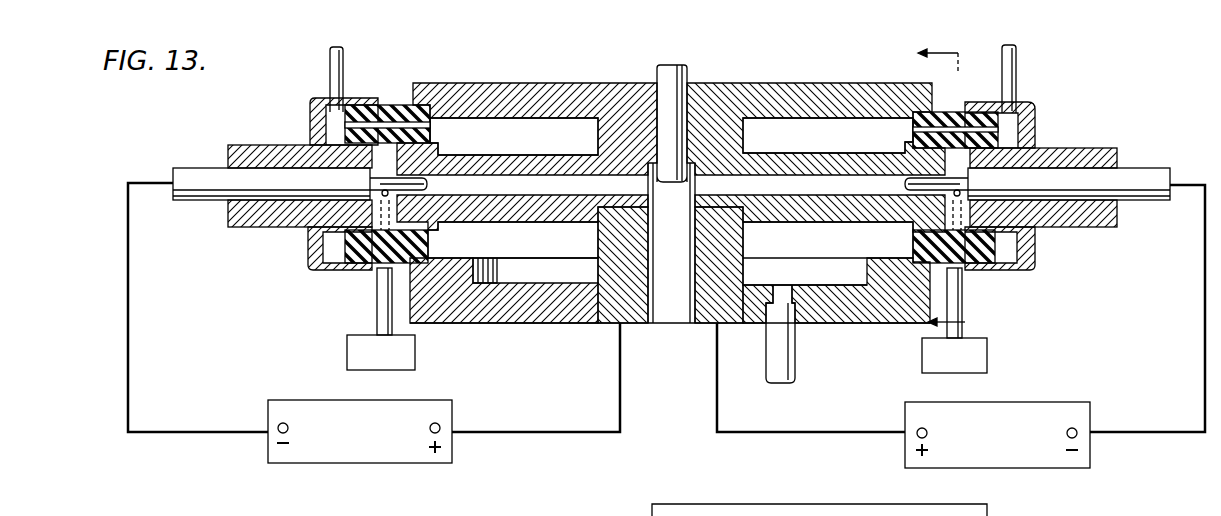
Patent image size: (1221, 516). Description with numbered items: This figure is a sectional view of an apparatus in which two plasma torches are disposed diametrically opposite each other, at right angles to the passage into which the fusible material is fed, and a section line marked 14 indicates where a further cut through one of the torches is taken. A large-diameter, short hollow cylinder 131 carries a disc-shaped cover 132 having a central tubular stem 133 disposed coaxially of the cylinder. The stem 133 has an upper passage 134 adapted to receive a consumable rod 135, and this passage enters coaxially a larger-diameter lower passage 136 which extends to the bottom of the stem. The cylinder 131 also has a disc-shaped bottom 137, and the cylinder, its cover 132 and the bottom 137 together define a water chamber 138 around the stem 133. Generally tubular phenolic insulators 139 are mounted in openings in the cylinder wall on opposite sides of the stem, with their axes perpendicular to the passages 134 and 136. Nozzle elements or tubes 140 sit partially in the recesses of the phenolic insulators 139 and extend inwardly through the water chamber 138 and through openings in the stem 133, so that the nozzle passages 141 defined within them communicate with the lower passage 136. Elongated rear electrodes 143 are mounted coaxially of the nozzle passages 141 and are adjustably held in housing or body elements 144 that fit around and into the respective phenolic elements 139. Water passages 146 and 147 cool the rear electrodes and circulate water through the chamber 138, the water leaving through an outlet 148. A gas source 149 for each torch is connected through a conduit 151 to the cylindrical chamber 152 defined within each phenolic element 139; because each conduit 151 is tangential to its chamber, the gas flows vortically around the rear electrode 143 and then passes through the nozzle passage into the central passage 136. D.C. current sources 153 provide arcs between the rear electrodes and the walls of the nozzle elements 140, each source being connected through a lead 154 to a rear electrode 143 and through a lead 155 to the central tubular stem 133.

The section line 14 is at (958, 177).
The hollow cylinder 131 is at (443, 257).
The disc-shaped cover 132 is at (800, 90).
The central tubular stem 133 is at (713, 243).
The upper passage 134 is at (668, 88).
The consumable rod 135 is at (686, 68).
The lower passage 136 is at (686, 308).
The disc-shaped bottom 137 is at (858, 302).
The water chamber 138 is at (828, 135).
The phenolic insulator 139 is at (358, 250).
The nozzle element 140 is at (483, 160).
The nozzle passage 141 is at (572, 186).
The rear electrode 143 is at (193, 173).
The body element 144 is at (320, 111).
The water passage 146 is at (342, 54).
The water passage 147 is at (390, 104).
The outlet 148 is at (783, 355).
The gas source 149 is at (417, 351).
The conduit 151 is at (378, 304).
The cylindrical chamber 152 is at (953, 172).
The current source 153 is at (423, 463).
The lead 154 is at (213, 432).
The lead 155 is at (607, 440).